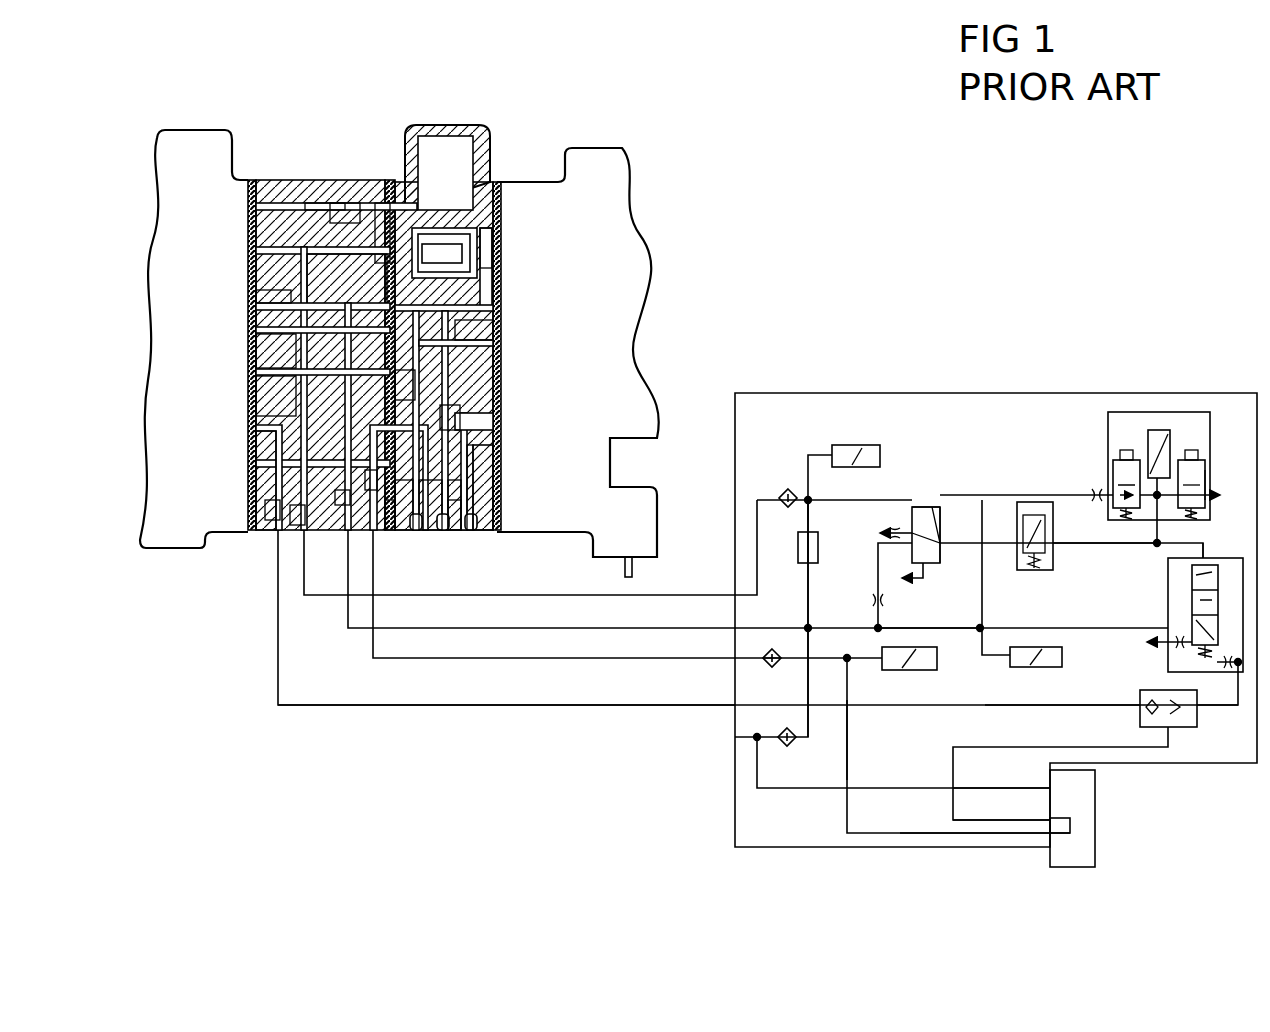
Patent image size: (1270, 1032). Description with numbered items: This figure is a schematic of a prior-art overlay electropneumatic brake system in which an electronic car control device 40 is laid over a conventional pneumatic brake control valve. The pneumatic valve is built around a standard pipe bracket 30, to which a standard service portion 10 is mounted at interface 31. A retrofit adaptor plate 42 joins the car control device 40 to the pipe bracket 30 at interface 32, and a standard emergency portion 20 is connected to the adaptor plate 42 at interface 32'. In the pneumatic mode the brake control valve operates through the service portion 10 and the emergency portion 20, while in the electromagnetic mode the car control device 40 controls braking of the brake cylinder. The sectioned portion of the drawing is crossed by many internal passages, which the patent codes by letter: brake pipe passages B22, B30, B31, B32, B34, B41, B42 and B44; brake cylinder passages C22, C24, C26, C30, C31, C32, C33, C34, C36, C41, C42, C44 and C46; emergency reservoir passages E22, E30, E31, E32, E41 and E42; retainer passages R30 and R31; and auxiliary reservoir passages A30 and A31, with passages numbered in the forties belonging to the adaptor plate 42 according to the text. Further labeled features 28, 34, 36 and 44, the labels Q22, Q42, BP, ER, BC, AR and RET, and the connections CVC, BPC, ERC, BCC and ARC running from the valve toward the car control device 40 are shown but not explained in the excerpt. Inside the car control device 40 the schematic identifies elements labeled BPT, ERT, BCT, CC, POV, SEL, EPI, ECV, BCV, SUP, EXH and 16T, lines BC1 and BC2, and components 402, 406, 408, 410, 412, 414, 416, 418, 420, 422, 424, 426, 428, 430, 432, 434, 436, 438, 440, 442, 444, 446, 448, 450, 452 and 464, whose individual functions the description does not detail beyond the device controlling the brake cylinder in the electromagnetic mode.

The service portion 10 is at (643, 333).
The emergency portion 20 is at (178, 540).
The housing notch 28 is at (628, 522).
The pipe bracket 30 is at (480, 132).
The interface 31 is at (495, 192).
The interface 32 is at (376, 328).
The interface 32' is at (244, 328).
The cavity 34 is at (460, 152).
The filter assembly 36 is at (447, 240).
The car control device 40 is at (1075, 393).
The adaptor plate 42 is at (275, 188).
The connection lines 44 is at (438, 735).
The connector block 402 is at (1095, 792).
The line 406 is at (922, 626).
The junction 408 is at (941, 735).
The line 410 is at (1225, 715).
The line 412 is at (995, 706).
The line 414 is at (1075, 747).
The line 416 is at (848, 755).
The check valve 418 is at (780, 668).
The line 420 is at (1203, 543).
The line 422 is at (1155, 536).
The line 424 is at (1008, 490).
The orifice 426 is at (1097, 486).
The line 428 is at (950, 558).
The pilot operated valve 430 is at (940, 520).
The valve port 432 is at (940, 520).
The line 434 is at (1092, 548).
The exhaust line 436 is at (872, 531).
The orifice 438 is at (870, 600).
The line 440 is at (835, 500).
The check valve 442 is at (782, 490).
The line 444 is at (818, 550).
The line 446 is at (810, 504).
The check valve 448 is at (805, 645).
The check valve 450 is at (782, 746).
The line 452 is at (865, 788).
The connector 464 is at (1070, 828).
The port Q22 is at (250, 205).
The port Q42 is at (312, 204).
The emergency reservoir passage E32 is at (333, 215).
The brake pipe passage B32 is at (386, 262).
The brake pipe passage B42 is at (280, 247).
The brake pipe passage B22 is at (250, 250).
The brake cylinder passage C34 is at (347, 279).
The emergency reservoir passage E22 is at (250, 307).
The emergency reservoir passage E42 is at (287, 303).
The brake cylinder passage C24 is at (250, 330).
The brake cylinder passage C44 is at (250, 352).
The brake cylinder passage C26 is at (250, 372).
The brake cylinder passage C46 is at (250, 392).
The brake cylinder passage C22 is at (250, 427).
The brake pipe passage B44 is at (250, 445).
The brake cylinder passage C32 is at (383, 420).
The brake cylinder passage C41 is at (370, 482).
The emergency reservoir passage E41 is at (347, 500).
The brake cylinder passage C42 is at (277, 510).
The brake pipe passage B41 is at (303, 517).
The brake pipe passage B31 is at (500, 252).
The emergency reservoir passage E31 is at (500, 310).
The brake cylinder passage C31 is at (505, 324).
The brake cylinder passage C33 is at (478, 355).
The brake cylinder passage C36 is at (395, 388).
The emergency reservoir passage E30 is at (500, 380).
The retainer passage R31 is at (497, 414).
The retainer passage R30 is at (500, 430).
The auxiliary reservoir passage A31 is at (496, 452).
The auxiliary reservoir passage A30 is at (497, 490).
The brake cylinder passage C30 is at (480, 538).
The brake pipe port BP is at (416, 530).
The emergency reservoir port ER is at (445, 530).
The brake cylinder port BC is at (428, 532).
The brake pipe passage B30 is at (420, 534).
The brake pipe passage B34 is at (388, 532).
The auxiliary reservoir port AR is at (470, 532).
The retainer port RET is at (462, 532).
The control valve connection CVC is at (758, 618).
The brake pipe connection BPC is at (530, 547).
The emergency reservoir connection ERC is at (758, 579).
The brake cylinder connection BCC is at (627, 594).
The auxiliary reservoir connection ARC is at (760, 601).
The brake pipe transducer BPT is at (856, 446).
The control chamber CC is at (797, 618).
The pilot operated valve POV is at (928, 507).
The emergency reservoir transducer ERT is at (1055, 657).
The brake cylinder transducer BCT is at (909, 670).
The selector valve SEL is at (1159, 700).
The electro-pneumatic interface valve EPI is at (1049, 536).
The transducer 16T is at (1159, 466).
The supply valve SUP is at (1126, 475).
The exhaust valve EXH is at (1194, 475).
The electronic control valve ECV is at (1205, 478).
The brake cylinder valve BCV is at (1168, 600).
The brake cylinder line 1 BC1 is at (1001, 808).
The brake cylinder line 2 BC2 is at (975, 823).